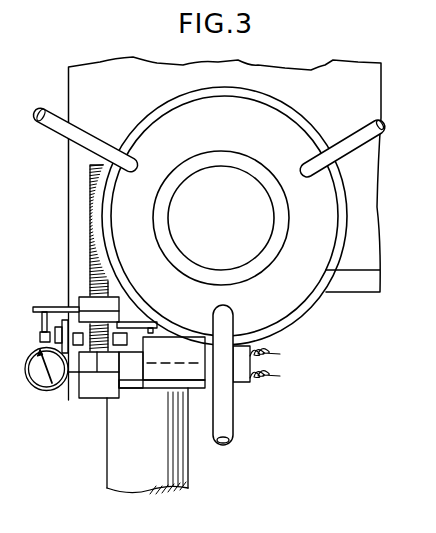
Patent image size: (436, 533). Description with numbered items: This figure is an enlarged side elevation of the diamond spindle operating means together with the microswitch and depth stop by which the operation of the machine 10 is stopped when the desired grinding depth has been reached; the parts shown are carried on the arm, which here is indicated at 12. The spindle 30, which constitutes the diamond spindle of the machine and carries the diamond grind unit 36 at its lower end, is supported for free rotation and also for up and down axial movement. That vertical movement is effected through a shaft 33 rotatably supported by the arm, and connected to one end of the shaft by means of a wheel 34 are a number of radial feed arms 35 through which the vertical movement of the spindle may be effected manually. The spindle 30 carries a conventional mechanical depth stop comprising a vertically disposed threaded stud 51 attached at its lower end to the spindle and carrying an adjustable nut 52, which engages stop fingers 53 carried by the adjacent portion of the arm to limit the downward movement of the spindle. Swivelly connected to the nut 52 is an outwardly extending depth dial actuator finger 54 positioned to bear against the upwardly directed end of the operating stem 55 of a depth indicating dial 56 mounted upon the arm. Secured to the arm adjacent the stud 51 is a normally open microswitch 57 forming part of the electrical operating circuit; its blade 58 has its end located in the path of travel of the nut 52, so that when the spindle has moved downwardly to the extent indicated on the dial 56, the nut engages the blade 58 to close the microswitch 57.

The apparatus 10 is at (10, 430).
The frame 12 is at (9, 160).
The spindle 30 is at (118, 453).
The shaft 33 is at (205, 190).
The wheel 34 is at (266, 100).
The radial feed arms 35 is at (341, 140).
The diamond grind unit 36 is at (98, 69).
The threaded stud 51 is at (90, 190).
The adjustable nut 52 is at (112, 303).
The stop fingers 53 is at (80, 347).
The depth dial actuator finger 54 is at (58, 308).
The operating stem 55 is at (42, 325).
The depth indicating dial 56 is at (33, 373).
The microswitch 57 is at (248, 373).
The blade 58 is at (135, 325).